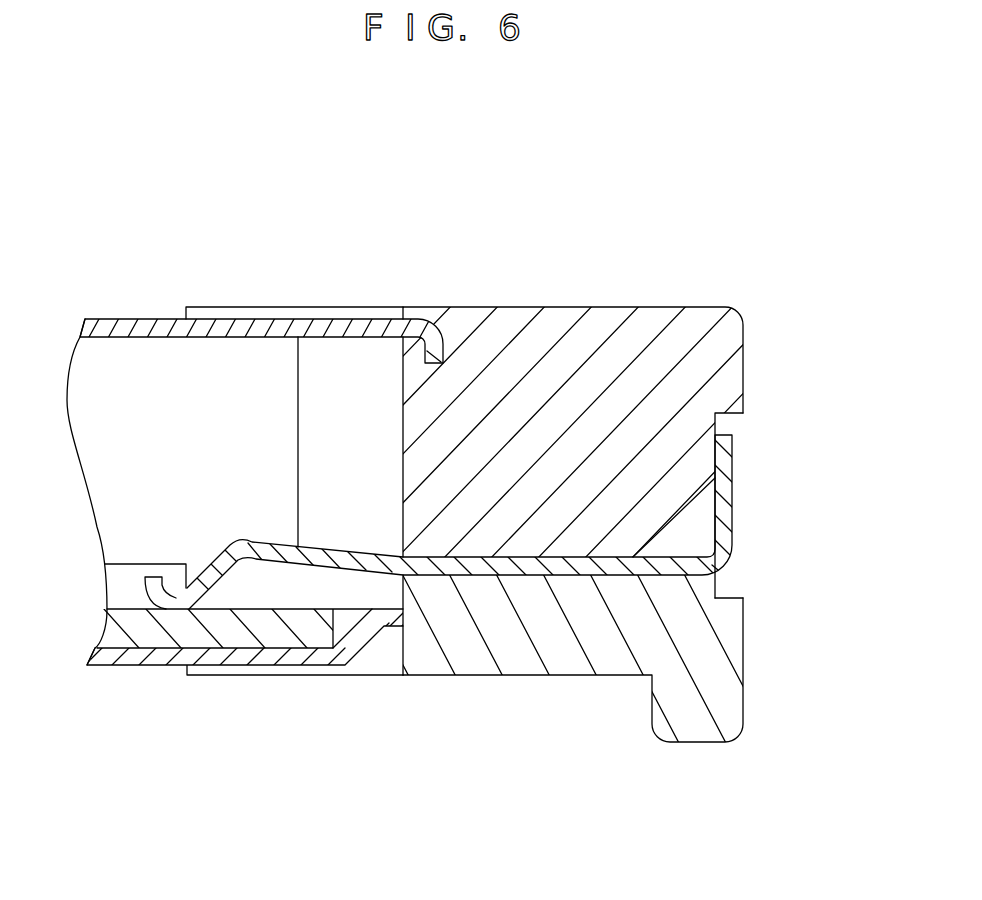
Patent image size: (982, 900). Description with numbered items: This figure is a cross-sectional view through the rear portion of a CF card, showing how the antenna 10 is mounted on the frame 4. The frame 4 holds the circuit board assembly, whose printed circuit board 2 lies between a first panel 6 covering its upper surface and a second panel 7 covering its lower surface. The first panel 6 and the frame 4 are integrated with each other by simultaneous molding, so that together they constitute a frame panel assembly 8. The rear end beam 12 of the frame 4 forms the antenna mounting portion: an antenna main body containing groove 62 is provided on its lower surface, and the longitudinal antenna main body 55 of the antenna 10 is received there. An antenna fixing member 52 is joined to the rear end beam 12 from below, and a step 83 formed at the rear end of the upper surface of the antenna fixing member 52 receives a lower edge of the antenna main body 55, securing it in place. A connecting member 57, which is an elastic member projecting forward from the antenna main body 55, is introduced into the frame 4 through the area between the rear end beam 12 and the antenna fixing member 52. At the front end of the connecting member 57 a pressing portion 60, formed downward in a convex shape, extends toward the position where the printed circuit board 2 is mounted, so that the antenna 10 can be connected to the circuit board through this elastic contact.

The printed circuit board 2 is at (255, 637).
The frame 4 is at (712, 300).
The first panel 6 is at (344, 328).
The second panel 7 is at (355, 655).
The frame panel assembly 8 is at (776, 268).
The antenna 10 is at (737, 477).
The rear end beam 12 is at (538, 342).
The antenna fixing member 52 is at (720, 659).
The antenna main body 55 is at (727, 498).
The connecting member 57 is at (557, 563).
The pressing portion 60 is at (172, 603).
The antenna main body containing groove 62 is at (748, 418).
The step 83 is at (741, 588).